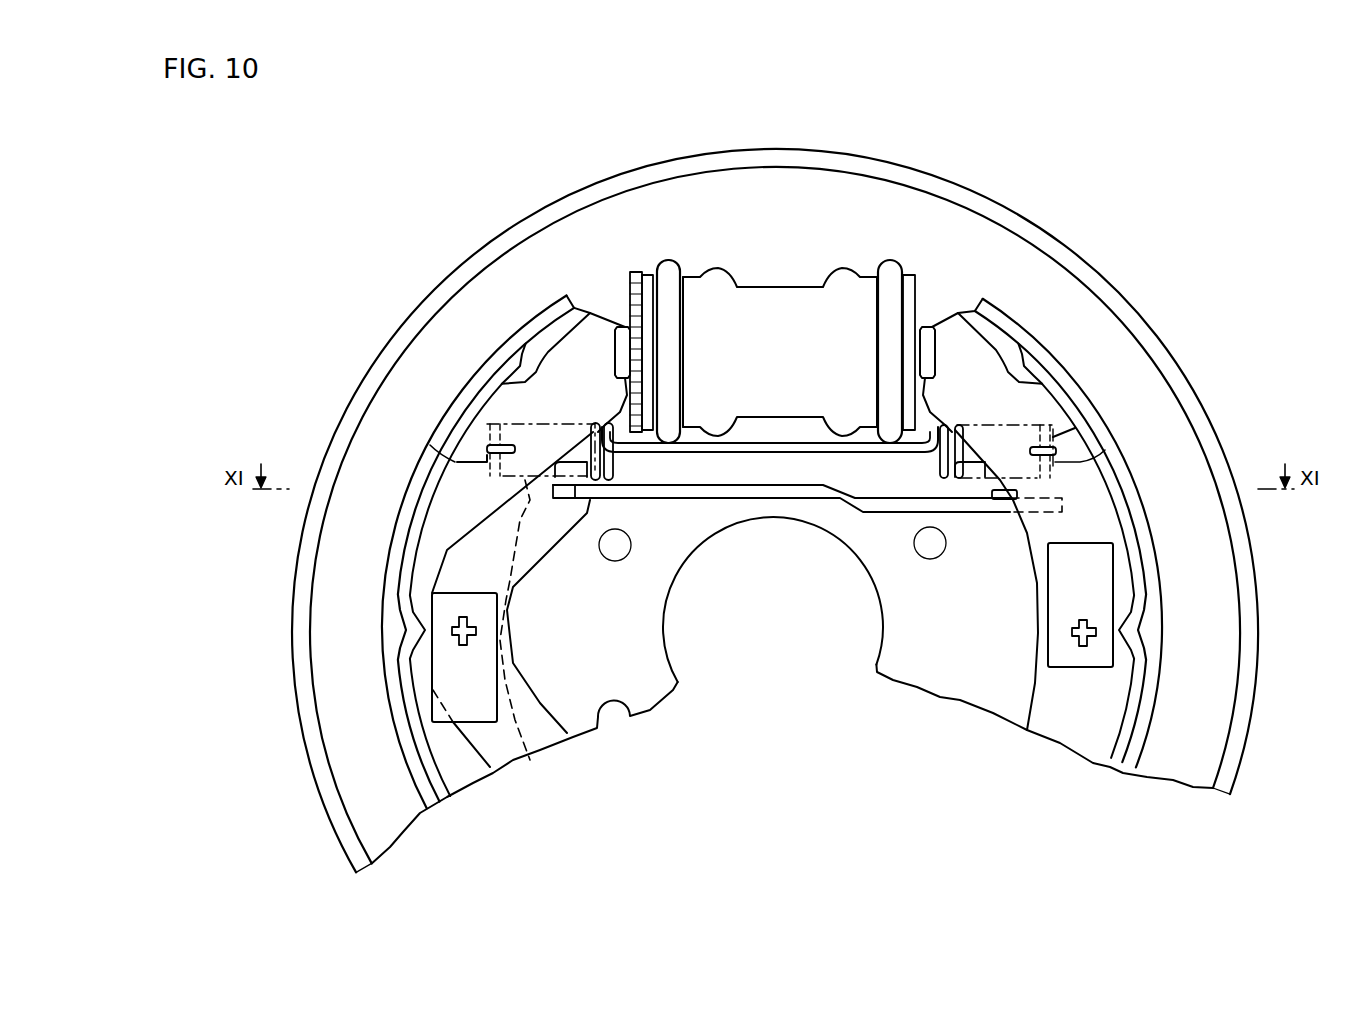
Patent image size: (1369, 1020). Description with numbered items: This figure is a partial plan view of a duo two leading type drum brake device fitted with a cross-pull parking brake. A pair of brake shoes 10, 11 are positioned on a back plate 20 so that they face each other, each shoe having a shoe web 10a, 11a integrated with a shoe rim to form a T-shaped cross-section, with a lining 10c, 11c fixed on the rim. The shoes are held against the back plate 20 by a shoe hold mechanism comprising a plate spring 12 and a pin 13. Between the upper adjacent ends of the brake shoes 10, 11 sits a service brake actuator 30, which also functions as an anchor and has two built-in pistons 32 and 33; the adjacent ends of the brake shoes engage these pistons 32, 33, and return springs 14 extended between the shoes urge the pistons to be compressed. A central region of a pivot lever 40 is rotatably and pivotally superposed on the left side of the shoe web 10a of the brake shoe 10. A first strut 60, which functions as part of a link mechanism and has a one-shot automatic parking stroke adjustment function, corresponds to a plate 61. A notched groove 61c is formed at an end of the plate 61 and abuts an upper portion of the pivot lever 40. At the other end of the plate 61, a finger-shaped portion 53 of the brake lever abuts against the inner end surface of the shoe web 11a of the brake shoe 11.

The brake shoe 10 is at (424, 547).
The shoe web 10a is at (430, 537).
The lining 10c is at (400, 632).
The brake shoe 11 is at (1125, 533).
The shoe web 11a is at (1110, 527).
The lining 11c is at (1155, 568).
The plate spring 12 is at (490, 692).
The pin 13 is at (480, 628).
The return spring 14 is at (773, 452).
The back plate 20 is at (1135, 305).
The service brake actuator 30 is at (763, 271).
The piston 32 is at (620, 318).
The piston 33 is at (932, 325).
The pivot lever 40 is at (507, 745).
The finger-shaped portion 53 is at (1003, 500).
The first strut 60 is at (807, 539).
The plate 61 is at (875, 510).
The notched groove 61c is at (557, 503).